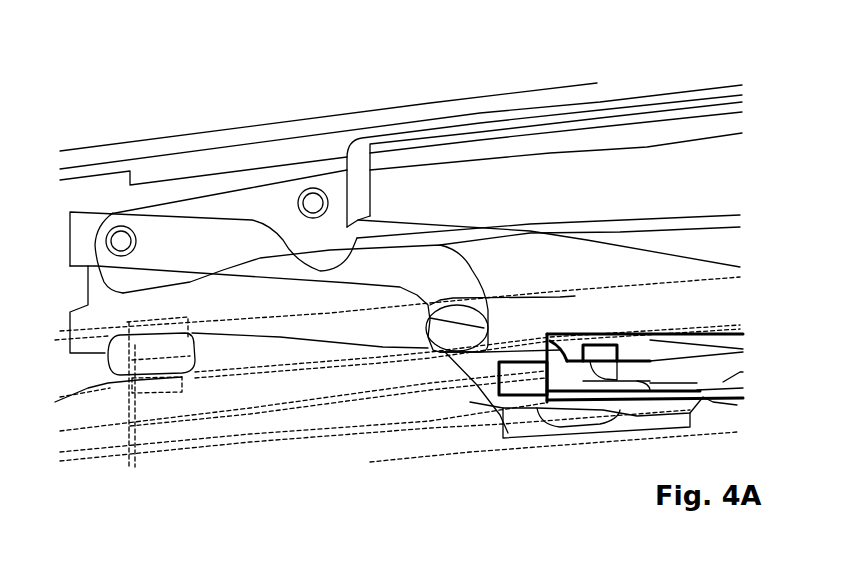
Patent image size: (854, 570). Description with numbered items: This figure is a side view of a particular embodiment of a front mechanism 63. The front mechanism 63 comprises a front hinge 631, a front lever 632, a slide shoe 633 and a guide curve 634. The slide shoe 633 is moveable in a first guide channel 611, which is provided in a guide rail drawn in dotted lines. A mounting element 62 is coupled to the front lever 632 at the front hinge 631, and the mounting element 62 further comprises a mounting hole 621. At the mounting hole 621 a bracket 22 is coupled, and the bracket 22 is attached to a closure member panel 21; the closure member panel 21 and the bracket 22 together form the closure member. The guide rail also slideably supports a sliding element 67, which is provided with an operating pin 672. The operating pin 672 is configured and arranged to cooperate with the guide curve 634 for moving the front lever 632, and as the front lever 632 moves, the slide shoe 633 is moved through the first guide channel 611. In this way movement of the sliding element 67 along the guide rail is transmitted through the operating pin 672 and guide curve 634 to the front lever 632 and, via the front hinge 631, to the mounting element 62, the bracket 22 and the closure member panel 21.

The closure member panel 21 is at (423, 110).
The bracket 22 is at (548, 148).
The mounting element 62 is at (569, 194).
The front mechanism 63 is at (55, 207).
The front hinge 631 is at (122, 239).
The mounting hole 621 is at (312, 205).
The first guide channel 611 is at (218, 353).
The front lever 632 is at (377, 327).
The slide shoe 633 is at (152, 358).
The guide curve 634 is at (403, 272).
The sliding element 67 is at (480, 372).
The operating pin 672 is at (443, 335).